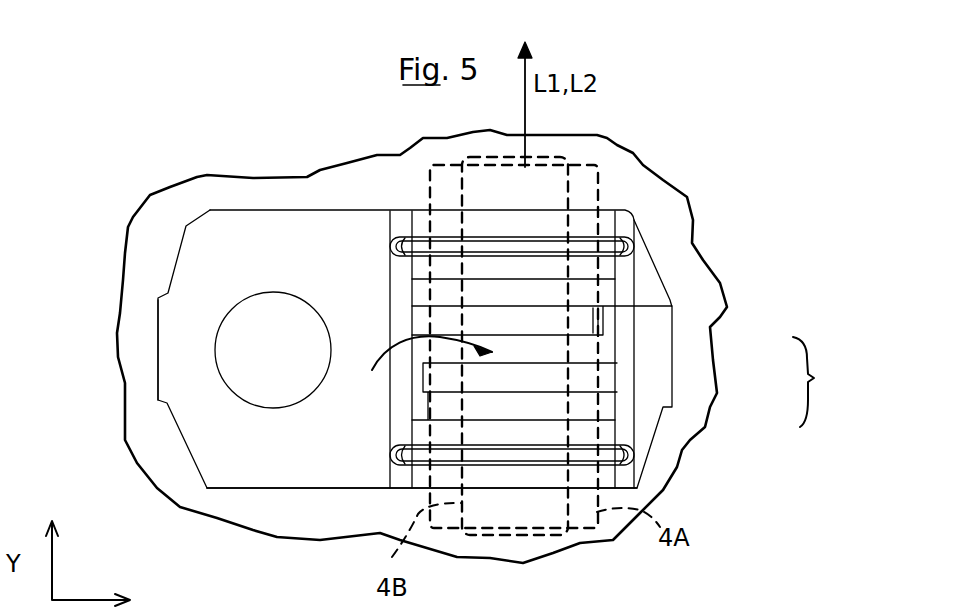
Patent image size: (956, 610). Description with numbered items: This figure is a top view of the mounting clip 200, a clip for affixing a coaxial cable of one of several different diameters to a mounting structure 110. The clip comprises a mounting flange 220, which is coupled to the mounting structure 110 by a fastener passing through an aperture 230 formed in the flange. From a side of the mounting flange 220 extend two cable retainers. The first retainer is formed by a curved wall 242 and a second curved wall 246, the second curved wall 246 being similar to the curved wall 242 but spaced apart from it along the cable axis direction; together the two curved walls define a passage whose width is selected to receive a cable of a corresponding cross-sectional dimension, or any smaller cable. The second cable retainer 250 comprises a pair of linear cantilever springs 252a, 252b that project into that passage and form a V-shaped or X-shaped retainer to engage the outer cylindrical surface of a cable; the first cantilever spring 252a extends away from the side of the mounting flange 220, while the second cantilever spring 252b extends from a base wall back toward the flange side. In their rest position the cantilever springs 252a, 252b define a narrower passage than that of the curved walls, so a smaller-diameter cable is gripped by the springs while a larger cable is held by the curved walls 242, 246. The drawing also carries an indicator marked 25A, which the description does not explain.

The mounting structure 110 is at (290, 522).
The mounting clip 200 is at (612, 270).
The mounting flange 220 is at (293, 462).
The aperture 230 is at (292, 302).
The second curved wall 246 is at (655, 278).
The curved wall 242 is at (610, 477).
The first cantilever spring 252a is at (583, 322).
The second cantilever spring 252b is at (550, 407).
The second cable retainer 250 is at (836, 382).
The direction arrow 25A is at (414, 367).